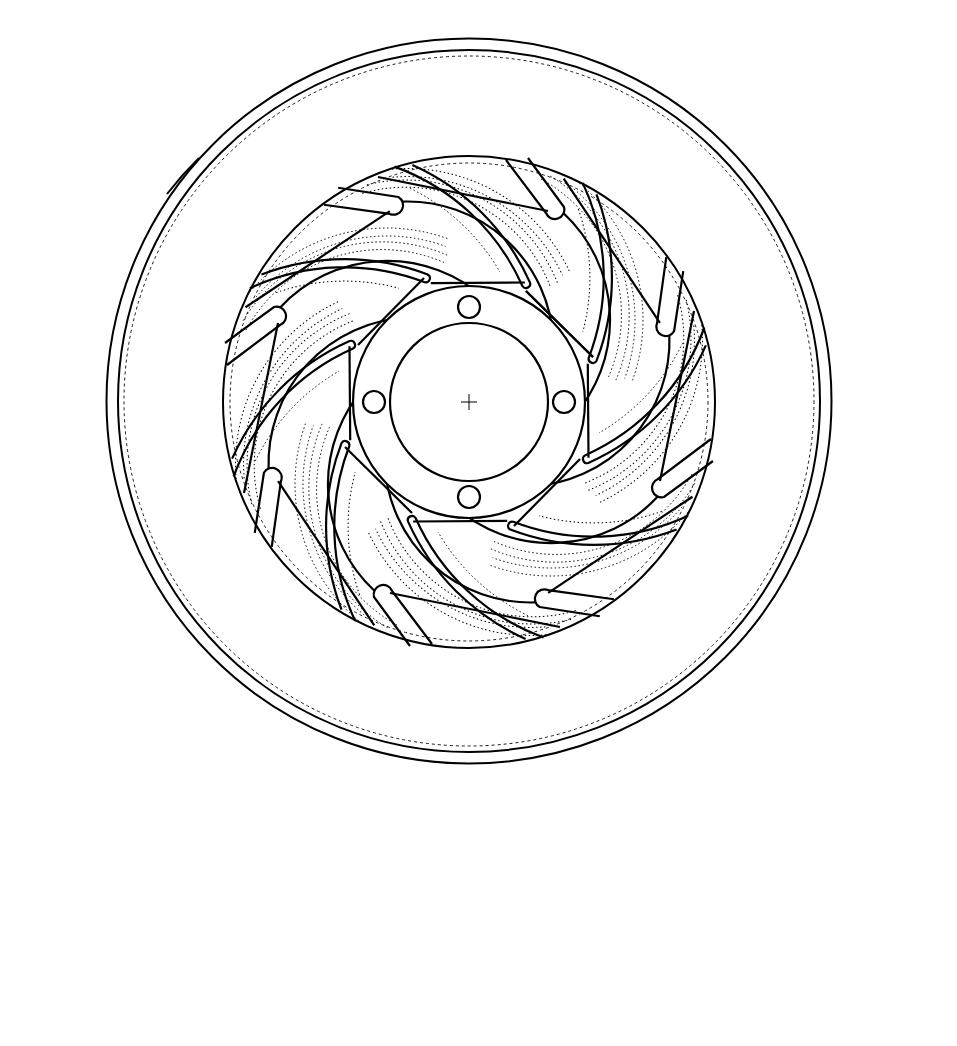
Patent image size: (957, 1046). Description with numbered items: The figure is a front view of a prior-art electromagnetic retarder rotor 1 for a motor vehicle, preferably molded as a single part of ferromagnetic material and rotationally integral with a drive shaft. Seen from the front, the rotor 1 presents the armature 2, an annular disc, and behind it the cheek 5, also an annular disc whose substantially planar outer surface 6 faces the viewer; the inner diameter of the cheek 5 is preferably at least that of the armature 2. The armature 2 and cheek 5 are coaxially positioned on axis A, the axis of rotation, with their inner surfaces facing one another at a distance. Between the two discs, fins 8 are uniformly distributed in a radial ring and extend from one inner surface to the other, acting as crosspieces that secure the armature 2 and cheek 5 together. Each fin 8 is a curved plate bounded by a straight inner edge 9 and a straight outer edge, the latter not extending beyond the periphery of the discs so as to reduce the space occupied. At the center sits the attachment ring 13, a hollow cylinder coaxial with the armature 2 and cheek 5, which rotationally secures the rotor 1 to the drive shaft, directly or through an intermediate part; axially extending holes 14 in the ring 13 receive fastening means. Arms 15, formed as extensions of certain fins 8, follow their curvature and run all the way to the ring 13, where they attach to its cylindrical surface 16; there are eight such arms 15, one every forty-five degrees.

The electromagnetic retarder rotor 1 is at (515, 401).
The armature 2 is at (165, 192).
The cheek 5 is at (168, 604).
The outer surface of the cheek 6 is at (670, 655).
The fin 8 is at (510, 288).
The inner edge of the fin 9 is at (664, 335).
The attachment ring 13 is at (518, 368).
The holes 14 is at (458, 309).
The arm 15 is at (345, 279).
The cylindrical surface of the ring 16 is at (570, 341).
The axis of rotation A is at (465, 399).